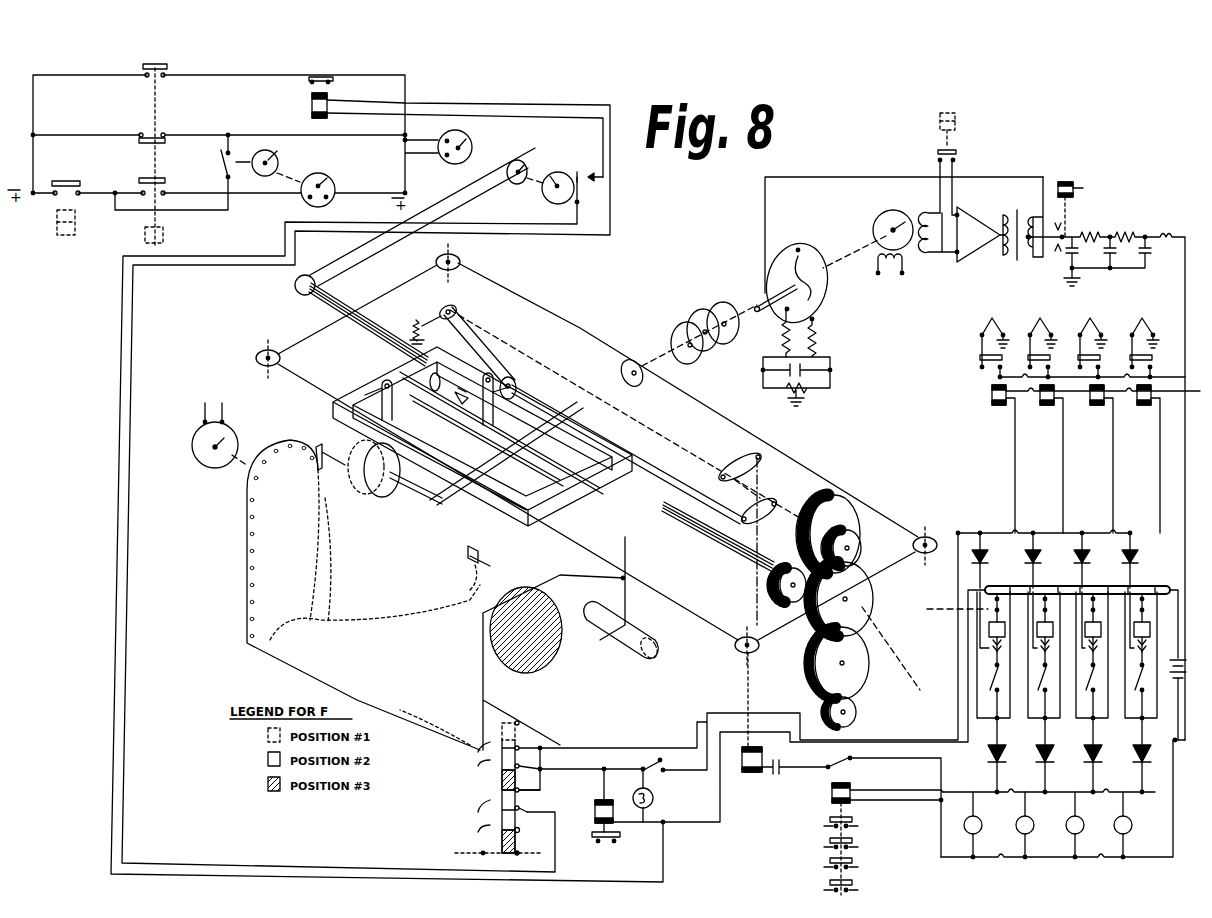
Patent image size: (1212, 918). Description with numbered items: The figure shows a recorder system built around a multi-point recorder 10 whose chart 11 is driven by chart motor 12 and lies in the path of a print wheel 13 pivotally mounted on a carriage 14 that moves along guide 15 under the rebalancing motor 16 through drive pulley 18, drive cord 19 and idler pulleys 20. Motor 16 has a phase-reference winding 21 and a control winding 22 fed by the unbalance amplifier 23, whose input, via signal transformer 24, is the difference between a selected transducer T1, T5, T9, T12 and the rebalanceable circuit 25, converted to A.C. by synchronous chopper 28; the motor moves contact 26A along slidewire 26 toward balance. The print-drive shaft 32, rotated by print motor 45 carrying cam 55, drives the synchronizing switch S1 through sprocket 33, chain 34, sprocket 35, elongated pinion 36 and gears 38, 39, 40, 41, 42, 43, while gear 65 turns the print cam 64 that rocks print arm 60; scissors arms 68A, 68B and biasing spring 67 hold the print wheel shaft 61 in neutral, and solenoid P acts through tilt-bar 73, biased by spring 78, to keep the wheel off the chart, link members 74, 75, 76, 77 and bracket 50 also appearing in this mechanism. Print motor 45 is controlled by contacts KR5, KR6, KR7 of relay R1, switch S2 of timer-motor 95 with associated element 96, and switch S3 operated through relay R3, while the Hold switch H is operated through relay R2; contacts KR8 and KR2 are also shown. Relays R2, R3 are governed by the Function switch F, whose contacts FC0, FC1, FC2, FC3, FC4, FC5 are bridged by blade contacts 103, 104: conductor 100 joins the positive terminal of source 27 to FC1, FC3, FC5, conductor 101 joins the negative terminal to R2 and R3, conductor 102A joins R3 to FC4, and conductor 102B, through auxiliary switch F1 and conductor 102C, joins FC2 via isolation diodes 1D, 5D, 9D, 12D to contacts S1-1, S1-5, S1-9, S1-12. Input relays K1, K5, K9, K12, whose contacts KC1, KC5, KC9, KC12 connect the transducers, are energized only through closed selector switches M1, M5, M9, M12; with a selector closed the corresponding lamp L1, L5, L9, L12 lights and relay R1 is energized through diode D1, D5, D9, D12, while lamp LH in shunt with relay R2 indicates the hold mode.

The multi-point recorder 10 is at (587, 452).
The recorder chart 11 is at (247, 612).
The chart motor 12 is at (191, 443).
The print wheel 13 is at (376, 484).
The recorder carriage 14 is at (596, 581).
The guide 15 is at (605, 650).
The rebalancing motor 16 is at (906, 208).
The drive pulley 18 is at (622, 370).
The drive cord 19 is at (500, 298).
The idler pulleys 20 is at (255, 358).
The phase-reference winding 21 is at (878, 258).
The control winding 22 is at (930, 247).
The unbalance amplifier 23 is at (978, 243).
The signal transformer 24 is at (1007, 248).
The rebalanceable circuit 25 is at (832, 372).
The slidewire 26 is at (822, 313).
The contact 26A is at (795, 283).
The current source 27 is at (1166, 700).
The synchronous chopper 28 is at (1074, 178).
The print-drive shaft 32 is at (478, 165).
The sprocket 33 is at (519, 162).
The chain 34 is at (440, 193).
The sprocket 35 is at (294, 285).
The elongated pinion 36 is at (298, 300).
The gear 38 is at (788, 600).
The gear 39 is at (848, 508).
The gear 40 is at (863, 545).
The gear 41 is at (875, 594).
The gear 42 is at (858, 655).
The gear 43 is at (858, 712).
The print motor 45 is at (465, 139).
The bracket 50 is at (315, 460).
The print motor cam 55 is at (543, 194).
The print arm 60 is at (505, 440).
The shaft of the print wheel 61 is at (412, 484).
The print cam 64 is at (462, 395).
The gear 65 is at (430, 384).
The biasing spring 67 is at (468, 558).
The scissors arm 68A is at (467, 548).
The scissors arm 68B is at (470, 578).
The tilt-bar 73 is at (612, 432).
The pivot 74 is at (515, 380).
The pivot link 75 is at (438, 316).
The link 76 is at (495, 340).
The link 77 is at (730, 462).
The spring 78 is at (410, 326).
The timer-motor 95 is at (330, 179).
The motor 96 is at (274, 160).
The conductor 100 is at (690, 745).
The conductor 101 is at (579, 203).
The conductor 102A is at (611, 193).
The conductor 102B is at (580, 762).
The conductor 102C is at (727, 705).
The blade contact 103 is at (490, 818).
The blade contact 104 is at (490, 758).
The relay contact KR6 is at (140, 73).
The relay contact KR5 is at (150, 136).
The relay contact KR7 is at (140, 186).
The relay contact KR8 is at (937, 152).
The relay contact KR2 is at (852, 759).
The Hold switch H is at (66, 180).
The relay R1 is at (144, 236).
The hold relay R2 is at (320, 516).
The print motor relay R3 is at (311, 104).
The cam-operated switch S2 is at (220, 163).
The cam-operated switch S3 is at (323, 74).
The synchronizing switch S1 is at (1178, 580).
The stationary contact S1-1 is at (988, 634).
The stationary contact S1-5 is at (1044, 655).
The stationary contact S1-9 is at (1092, 655).
The stationary contact S1-12 is at (1141, 655).
The transducer T1 is at (985, 325).
The transducer T5 is at (1038, 322).
The transducer T9 is at (1088, 322).
The transducer T12 is at (1143, 322).
The relay contact KC1 is at (980, 357).
The relay contact KC5 is at (1049, 356).
The relay contact KC9 is at (1099, 356).
The relay contact KC12 is at (1155, 356).
The input-selector relay K1 is at (991, 398).
The input-selector relay K5 is at (1046, 405).
The input-selector relay K9 is at (1095, 406).
The input-selector relay K12 is at (1143, 406).
The isolation diode 1D is at (985, 558).
The isolation diode 5D is at (1038, 558).
The isolation diode 9D is at (1088, 560).
The isolation diode 12D is at (1134, 558).
The selector switch M1 is at (990, 676).
The selector switch M5 is at (1040, 676).
The selector switch M9 is at (1088, 676).
The selector switch M12 is at (1128, 686).
The diode D1 is at (1002, 756).
The isolation diode D5 is at (1050, 756).
The diode D9 is at (1098, 756).
The diode D12 is at (1151, 756).
The lamp L1 is at (980, 825).
The indicator lamp L5 is at (1032, 825).
The lamp L9 is at (1082, 825).
The lamp L12 is at (1133, 825).
The solenoid P is at (745, 772).
The lamp LH is at (638, 794).
The Function switch F is at (480, 793).
The auxiliary Function switch F1 is at (650, 764).
The contact FC0 is at (519, 722).
The Function-switch contact FC1 is at (529, 740).
The Function-switch contact FC2 is at (527, 761).
The Function-switch contact FC3 is at (525, 790).
The Function-switch contact FC4 is at (525, 808).
The Function-switch contact FC5 is at (518, 833).